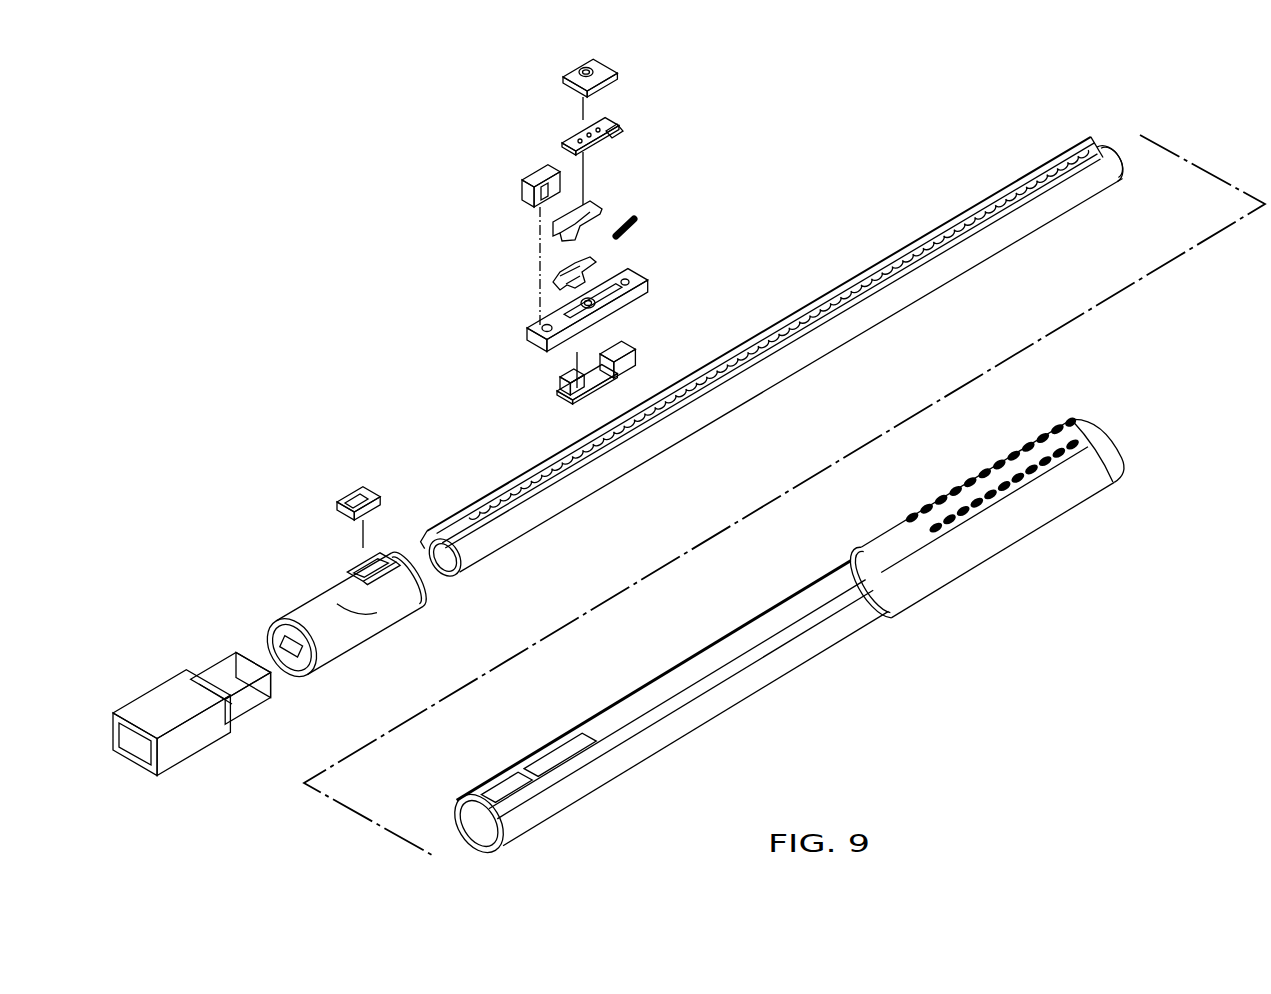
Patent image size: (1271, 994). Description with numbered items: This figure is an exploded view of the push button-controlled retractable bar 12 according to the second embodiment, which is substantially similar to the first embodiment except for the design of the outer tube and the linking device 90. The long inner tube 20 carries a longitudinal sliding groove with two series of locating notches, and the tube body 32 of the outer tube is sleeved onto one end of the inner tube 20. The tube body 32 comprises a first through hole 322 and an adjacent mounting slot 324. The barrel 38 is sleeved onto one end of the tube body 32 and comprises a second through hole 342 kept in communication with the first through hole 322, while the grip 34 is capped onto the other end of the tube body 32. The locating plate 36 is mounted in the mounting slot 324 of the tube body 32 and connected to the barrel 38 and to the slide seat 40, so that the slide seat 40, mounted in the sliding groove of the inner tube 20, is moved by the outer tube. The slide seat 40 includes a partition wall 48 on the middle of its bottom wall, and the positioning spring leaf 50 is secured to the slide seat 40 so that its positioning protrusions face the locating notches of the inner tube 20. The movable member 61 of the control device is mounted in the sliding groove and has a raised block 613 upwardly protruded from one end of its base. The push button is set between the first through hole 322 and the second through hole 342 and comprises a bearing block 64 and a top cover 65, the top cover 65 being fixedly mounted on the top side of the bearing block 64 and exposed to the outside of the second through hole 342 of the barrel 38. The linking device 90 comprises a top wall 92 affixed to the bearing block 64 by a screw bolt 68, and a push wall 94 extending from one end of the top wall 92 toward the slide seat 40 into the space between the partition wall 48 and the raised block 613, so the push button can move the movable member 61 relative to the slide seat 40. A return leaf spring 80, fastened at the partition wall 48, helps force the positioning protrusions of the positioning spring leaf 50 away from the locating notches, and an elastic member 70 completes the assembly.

The push button-controlled retractable bar 12 is at (205, 258).
The inner tube 20 is at (1108, 140).
The tube body 32 is at (760, 668).
The grip 34 is at (985, 548).
The locating plate 36 is at (526, 176).
The barrel 38 is at (360, 640).
The slide seat 40 is at (525, 346).
The partition wall 48 is at (600, 307).
The positioning spring leaf 50 is at (529, 292).
The movable member 61 is at (545, 398).
The raised block 613 is at (630, 352).
The bearing block 64 is at (606, 67).
The top cover 65 is at (348, 490).
The screw bolt 68 is at (576, 65).
The elastic member 70 is at (631, 222).
The return leaf spring 80 is at (528, 236).
The linking device 90 is at (557, 129).
The top wall 92 is at (601, 128).
The push wall 94 is at (613, 138).
The first through hole 322 is at (552, 750).
The mounting slot 324 is at (497, 782).
The second through hole 342 is at (352, 565).